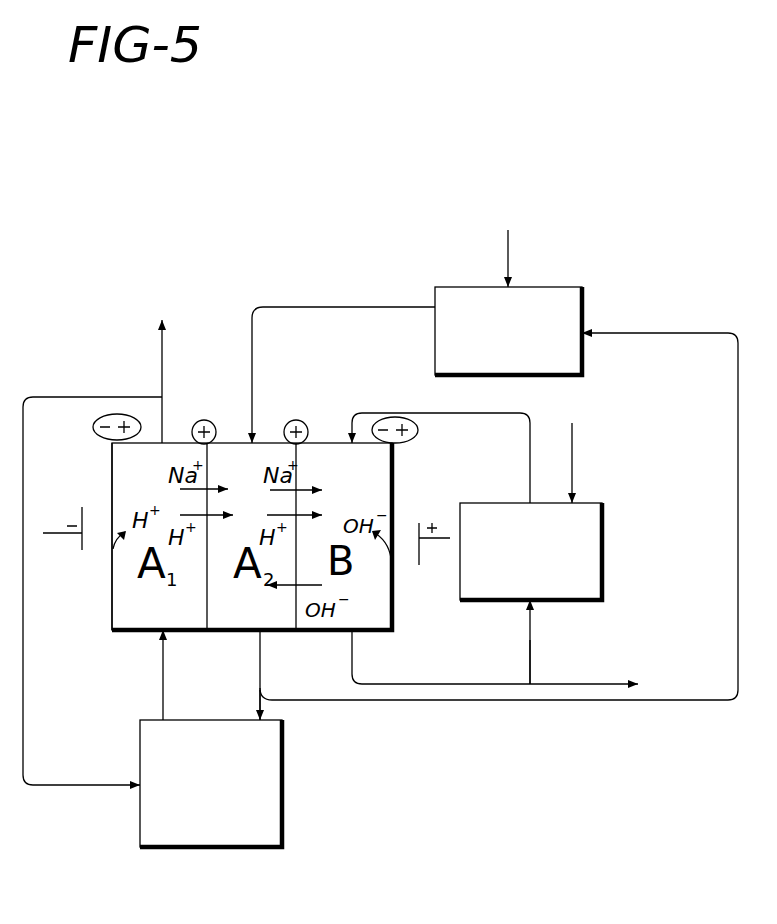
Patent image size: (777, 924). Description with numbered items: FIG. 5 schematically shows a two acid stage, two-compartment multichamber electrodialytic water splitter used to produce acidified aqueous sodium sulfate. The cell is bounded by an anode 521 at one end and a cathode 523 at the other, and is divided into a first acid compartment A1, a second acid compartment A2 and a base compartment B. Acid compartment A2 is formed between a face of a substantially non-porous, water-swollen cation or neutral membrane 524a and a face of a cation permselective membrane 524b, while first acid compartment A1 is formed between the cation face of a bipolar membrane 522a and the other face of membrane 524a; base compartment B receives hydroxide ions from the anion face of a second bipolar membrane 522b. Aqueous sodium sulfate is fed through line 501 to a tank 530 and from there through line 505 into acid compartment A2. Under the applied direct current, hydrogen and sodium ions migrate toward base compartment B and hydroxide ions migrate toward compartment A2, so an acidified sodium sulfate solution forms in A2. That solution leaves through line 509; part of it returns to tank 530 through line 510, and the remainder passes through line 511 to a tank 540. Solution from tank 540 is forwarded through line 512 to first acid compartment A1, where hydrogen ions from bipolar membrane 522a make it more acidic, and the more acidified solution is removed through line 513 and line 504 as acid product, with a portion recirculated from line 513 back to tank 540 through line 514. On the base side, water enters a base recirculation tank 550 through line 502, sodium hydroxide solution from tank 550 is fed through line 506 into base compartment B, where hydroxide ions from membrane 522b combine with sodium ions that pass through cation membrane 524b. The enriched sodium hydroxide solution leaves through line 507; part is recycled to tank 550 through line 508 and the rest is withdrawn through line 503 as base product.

The line 501 is at (508, 255).
The line 502 is at (572, 474).
The line 503 is at (600, 662).
The line 504 is at (162, 354).
The line 505 is at (353, 307).
The line 506 is at (490, 390).
The line 507 is at (455, 648).
The line 508 is at (588, 636).
The line 509 is at (260, 690).
The line 510 is at (596, 701).
The line 511 is at (268, 700).
The line 512 is at (163, 693).
The line 513 is at (162, 423).
The line 514 is at (23, 690).
The anode 521 is at (80, 540).
The bipolar membrane 522a is at (112, 599).
The bipolar membrane 522b is at (392, 595).
The cathode 523 is at (425, 518).
The substantially non-porous, water-swollen cation or neutral membrane 524a is at (207, 599).
The cation permselective membrane 524b is at (296, 623).
The tank 530 is at (582, 310).
The tank 540 is at (282, 810).
The base recirculation tank 550 is at (602, 562).